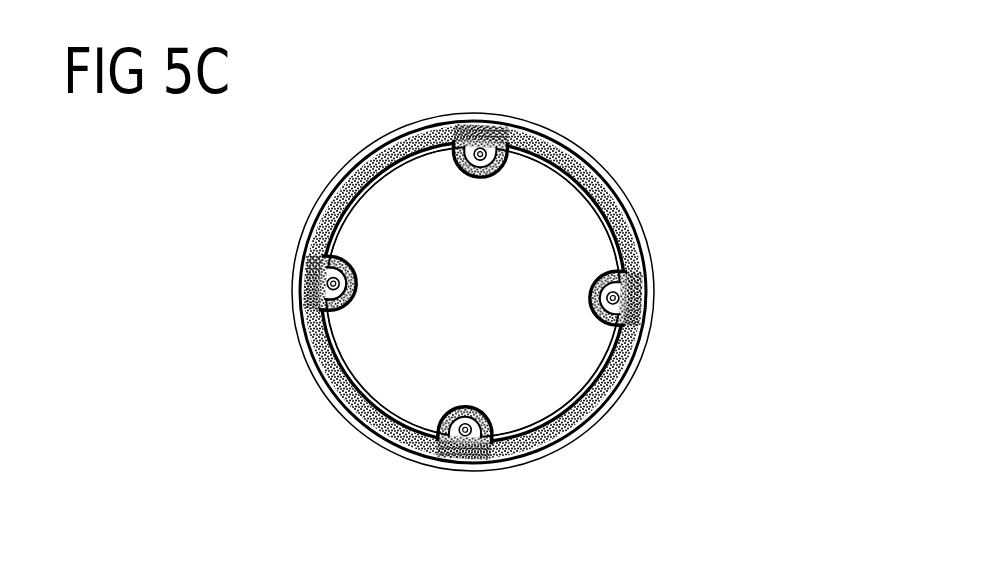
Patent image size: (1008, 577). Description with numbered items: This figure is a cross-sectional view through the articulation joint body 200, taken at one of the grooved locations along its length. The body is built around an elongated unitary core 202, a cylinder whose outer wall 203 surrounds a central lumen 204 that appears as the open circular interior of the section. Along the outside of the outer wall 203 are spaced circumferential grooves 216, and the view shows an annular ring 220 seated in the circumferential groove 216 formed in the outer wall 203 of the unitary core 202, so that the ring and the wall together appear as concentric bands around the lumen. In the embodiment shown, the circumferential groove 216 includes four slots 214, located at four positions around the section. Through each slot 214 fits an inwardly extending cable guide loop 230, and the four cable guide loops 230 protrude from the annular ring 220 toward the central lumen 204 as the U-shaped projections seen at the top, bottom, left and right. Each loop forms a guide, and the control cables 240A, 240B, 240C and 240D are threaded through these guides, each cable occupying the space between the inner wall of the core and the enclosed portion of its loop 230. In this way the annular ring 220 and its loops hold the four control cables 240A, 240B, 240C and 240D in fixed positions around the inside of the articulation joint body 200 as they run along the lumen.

The articulation joint body 200 is at (508, 35).
The elongated unitary core 202 is at (510, 98).
The outer wall 203 is at (376, 140).
The central lumen 204 is at (555, 347).
The slot 214 is at (633, 267).
The circumferential groove 216 is at (593, 177).
The annular ring 220 is at (332, 185).
The cable guide loop 230 is at (300, 316).
The control cable 240A is at (437, 458).
The control cable 240B is at (640, 317).
The control cable 240C is at (527, 121).
The control cable 240D is at (300, 263).